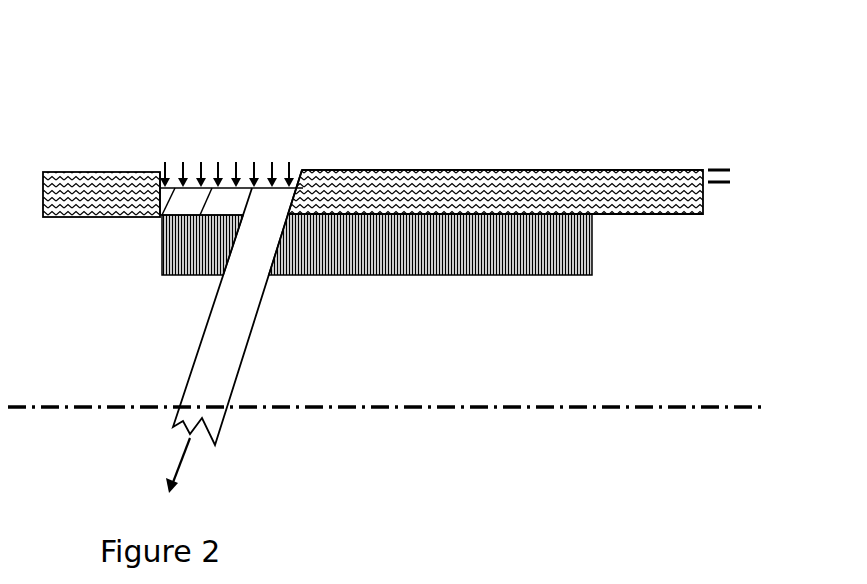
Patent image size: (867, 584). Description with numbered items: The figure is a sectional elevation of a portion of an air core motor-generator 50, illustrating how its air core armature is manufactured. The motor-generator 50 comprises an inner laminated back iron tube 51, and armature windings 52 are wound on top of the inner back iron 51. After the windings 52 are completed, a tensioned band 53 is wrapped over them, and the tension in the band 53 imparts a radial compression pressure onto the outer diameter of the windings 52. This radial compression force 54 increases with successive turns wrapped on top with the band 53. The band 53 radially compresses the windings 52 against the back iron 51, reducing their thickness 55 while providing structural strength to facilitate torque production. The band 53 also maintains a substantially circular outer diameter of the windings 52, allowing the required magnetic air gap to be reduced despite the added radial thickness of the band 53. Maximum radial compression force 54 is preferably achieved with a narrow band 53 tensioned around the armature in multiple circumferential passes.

The air core motor-generator 50 is at (143, 55).
The inner laminated back iron tube 51 is at (420, 268).
The armature windings 52 is at (437, 170).
The tensioned band 53 is at (248, 345).
The radial compression force 54 is at (283, 142).
The thickness 55 is at (735, 168).